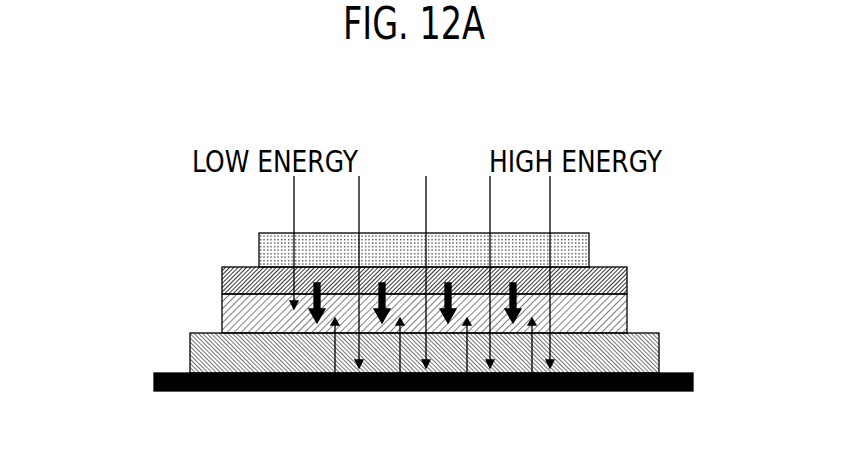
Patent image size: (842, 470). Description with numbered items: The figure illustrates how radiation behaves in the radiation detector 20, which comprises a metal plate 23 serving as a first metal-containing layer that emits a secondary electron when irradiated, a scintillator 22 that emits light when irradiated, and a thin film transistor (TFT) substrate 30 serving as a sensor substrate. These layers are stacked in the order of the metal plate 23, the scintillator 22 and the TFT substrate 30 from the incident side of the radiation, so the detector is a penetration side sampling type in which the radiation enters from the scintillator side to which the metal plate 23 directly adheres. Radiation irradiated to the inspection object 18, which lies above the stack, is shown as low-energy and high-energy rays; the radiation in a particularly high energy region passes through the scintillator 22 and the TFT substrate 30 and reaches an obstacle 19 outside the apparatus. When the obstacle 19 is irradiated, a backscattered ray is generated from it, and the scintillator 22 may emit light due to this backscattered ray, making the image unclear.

The inspection object 18 is at (589, 247).
The obstacle 19 is at (693, 378).
The radiation detector 20 is at (357, 317).
The scintillator 22 is at (222, 311).
The metal plate 23 is at (222, 276).
The thin film transistor (TFT) substrate 30 is at (389, 352).